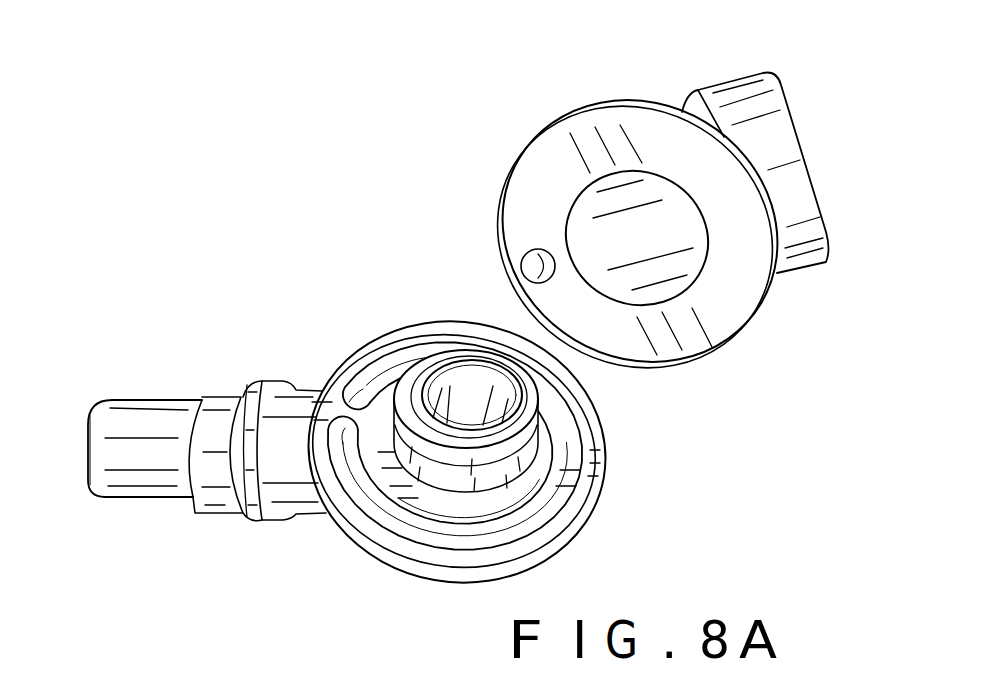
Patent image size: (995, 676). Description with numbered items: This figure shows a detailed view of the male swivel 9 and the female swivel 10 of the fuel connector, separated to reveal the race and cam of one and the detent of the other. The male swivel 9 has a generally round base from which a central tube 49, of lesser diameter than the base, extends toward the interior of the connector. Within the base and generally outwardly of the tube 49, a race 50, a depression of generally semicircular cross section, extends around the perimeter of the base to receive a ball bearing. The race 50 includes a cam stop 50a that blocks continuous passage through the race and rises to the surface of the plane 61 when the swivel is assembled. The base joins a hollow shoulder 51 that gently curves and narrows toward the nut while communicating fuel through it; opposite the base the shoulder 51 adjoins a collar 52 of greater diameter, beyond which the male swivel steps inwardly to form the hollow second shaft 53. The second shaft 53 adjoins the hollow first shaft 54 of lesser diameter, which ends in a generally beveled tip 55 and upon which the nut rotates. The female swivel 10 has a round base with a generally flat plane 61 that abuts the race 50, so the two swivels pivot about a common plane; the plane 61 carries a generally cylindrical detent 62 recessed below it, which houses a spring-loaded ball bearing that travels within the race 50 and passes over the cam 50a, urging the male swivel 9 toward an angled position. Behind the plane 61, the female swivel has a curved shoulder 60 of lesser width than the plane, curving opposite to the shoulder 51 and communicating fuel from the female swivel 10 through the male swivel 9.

The male swivel 9 is at (338, 573).
The female swivel 10 is at (597, 83).
The central tube 49 is at (453, 365).
The race 50 is at (540, 502).
The cam stop 50a is at (346, 410).
The hollow shoulder 51 is at (307, 500).
The collar 52 is at (247, 520).
The second shaft 53 is at (222, 403).
The first shaft 54 is at (165, 408).
The tip 55 is at (88, 433).
The shoulder 60 is at (747, 92).
The plane 61 is at (733, 312).
The detent 62 is at (533, 265).